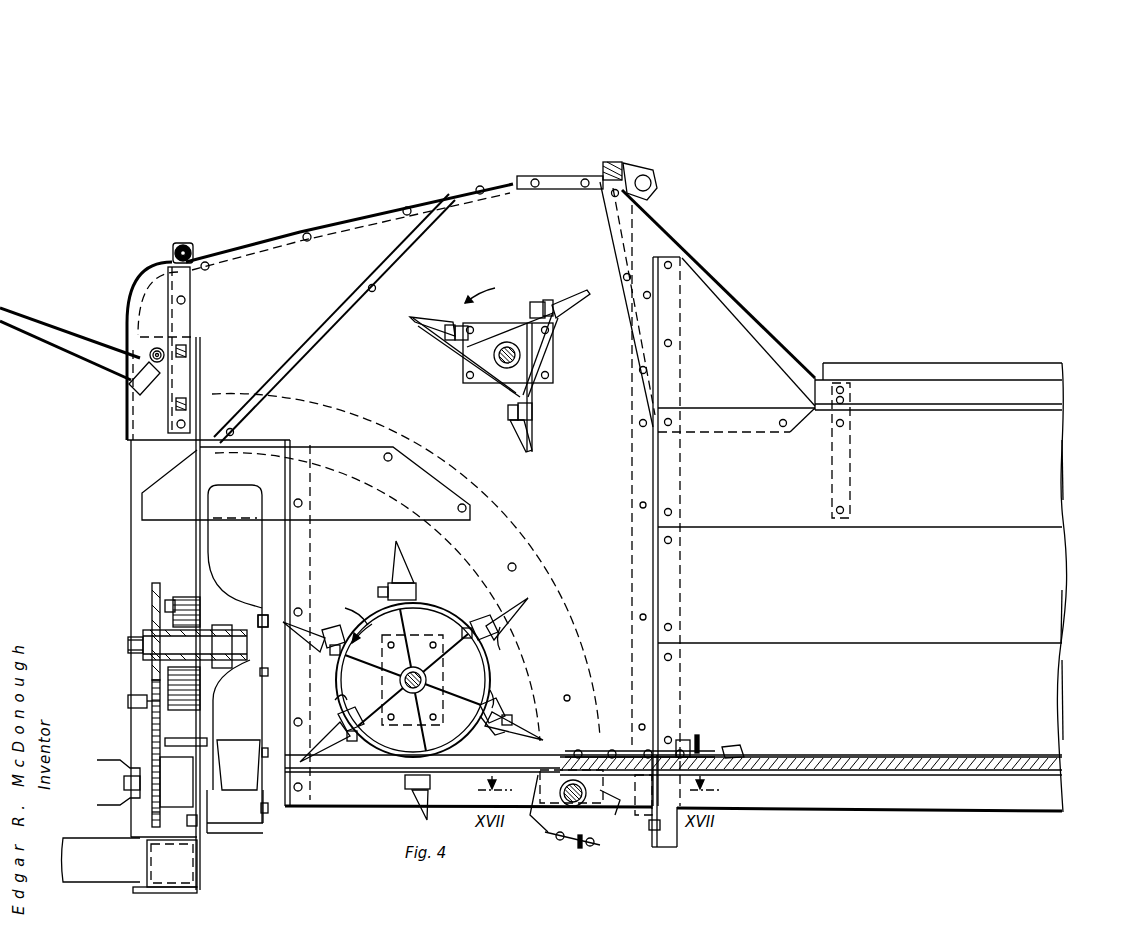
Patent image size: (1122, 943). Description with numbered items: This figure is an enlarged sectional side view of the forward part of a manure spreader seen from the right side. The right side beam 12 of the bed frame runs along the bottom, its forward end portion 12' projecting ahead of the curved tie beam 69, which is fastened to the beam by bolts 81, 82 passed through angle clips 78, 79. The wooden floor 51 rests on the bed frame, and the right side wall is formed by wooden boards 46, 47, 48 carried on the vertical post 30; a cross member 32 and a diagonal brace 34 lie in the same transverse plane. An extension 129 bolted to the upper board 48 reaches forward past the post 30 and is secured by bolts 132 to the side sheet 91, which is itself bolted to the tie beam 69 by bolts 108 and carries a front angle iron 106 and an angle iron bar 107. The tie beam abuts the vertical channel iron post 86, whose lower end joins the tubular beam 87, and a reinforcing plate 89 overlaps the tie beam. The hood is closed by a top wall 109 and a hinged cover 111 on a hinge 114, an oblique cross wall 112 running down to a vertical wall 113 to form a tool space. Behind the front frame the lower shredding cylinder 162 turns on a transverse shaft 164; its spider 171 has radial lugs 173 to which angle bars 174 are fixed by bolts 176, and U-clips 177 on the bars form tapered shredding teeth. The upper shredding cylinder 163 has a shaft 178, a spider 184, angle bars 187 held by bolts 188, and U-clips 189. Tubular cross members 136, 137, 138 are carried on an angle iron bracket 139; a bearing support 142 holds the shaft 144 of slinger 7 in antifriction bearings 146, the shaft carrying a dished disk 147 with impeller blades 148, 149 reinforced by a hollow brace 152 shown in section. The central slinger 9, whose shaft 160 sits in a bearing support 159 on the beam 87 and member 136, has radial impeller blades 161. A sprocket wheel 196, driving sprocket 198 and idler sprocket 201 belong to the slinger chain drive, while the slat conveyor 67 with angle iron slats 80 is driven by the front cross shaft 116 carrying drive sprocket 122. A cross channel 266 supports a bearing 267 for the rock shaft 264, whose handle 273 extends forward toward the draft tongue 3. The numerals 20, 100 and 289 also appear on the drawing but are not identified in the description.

The draft tongue 3 is at (86, 838).
The vertical slinger 7 is at (233, 569).
The central slinger 9 is at (256, 833).
The side beam 12 is at (673, 796).
The forward end portion of side beam 12' is at (468, 799).
The platform 20 is at (921, 590).
The vertical post 30 is at (680, 585).
The cross member 32 is at (684, 740).
The diagonal brace 34 is at (655, 847).
The wooden board 46 is at (1053, 716).
The wooden board 47 is at (1052, 632).
The wooden board 48 is at (1052, 488).
The wooden floor 51 is at (938, 757).
The slat conveyor 67 is at (731, 747).
The tie beam 69 is at (546, 553).
The angle clip 78 is at (501, 732).
The angle clip 79 is at (637, 815).
The angle iron slats 80 is at (700, 738).
The bolt 81 is at (532, 820).
The bolt 82 is at (598, 805).
The vertical channel iron post 86 is at (131, 465).
The transverse tubular beam 87 is at (183, 893).
The reinforcing plate 89 is at (395, 520).
The side sheet 91 is at (290, 571).
The bolt 100 is at (298, 791).
The front angle iron 106 is at (312, 600).
The angle iron bar 107 is at (632, 578).
The bolts 108 is at (460, 505).
The top wall 109 is at (345, 222).
The hinged cover 111 is at (133, 299).
The oblique cross wall 112 is at (336, 318).
The vertical transverse wall 113 is at (198, 528).
The hinge 114 is at (173, 253).
The front cross shaft 116 is at (578, 750).
The drive sprocket 122 is at (549, 838).
The extension 129 is at (746, 308).
The bolts 132 is at (611, 195).
The tubular cross member 136 is at (176, 757).
The tubular cross member 137 is at (168, 680).
The tubular cross member 138 is at (186, 597).
The angle iron bracket 139 is at (168, 598).
The bearing support 142 is at (226, 630).
The slinger shaft 144 is at (131, 652).
The antifriction bearings 146 is at (221, 668).
The dished disk 147 is at (216, 709).
The impeller blade 148 is at (243, 487).
The impeller blade 149 is at (265, 680).
The hollow brace 152 is at (229, 790).
The bearing support 159 is at (187, 822).
The slinger shaft 160 is at (124, 780).
The radial impeller blades 161 is at (220, 834).
The lower shredding cylinder 162 is at (453, 610).
The upper shredding cylinder 163 is at (535, 389).
The transverse shaft 164 is at (428, 679).
The spider 171 is at (341, 701).
The radial lugs 173 is at (372, 624).
The angle bars 174 is at (395, 588).
The bolts 176 is at (416, 592).
The U-clips 177 is at (405, 558).
The shaft 178 is at (505, 342).
The spider 184 is at (504, 387).
The angle bars 187 is at (549, 301).
The bolts 188 is at (536, 302).
The U-clips 189 is at (425, 316).
The sprocket wheel 196 is at (152, 815).
The driving sprocket 198 is at (152, 600).
The idler sprocket 201 is at (152, 724).
The rock shaft 264 is at (137, 370).
The cross channel 266 is at (188, 376).
The bearing 267 is at (156, 348).
The handle 273 is at (63, 352).
The plate 289 is at (657, 191).